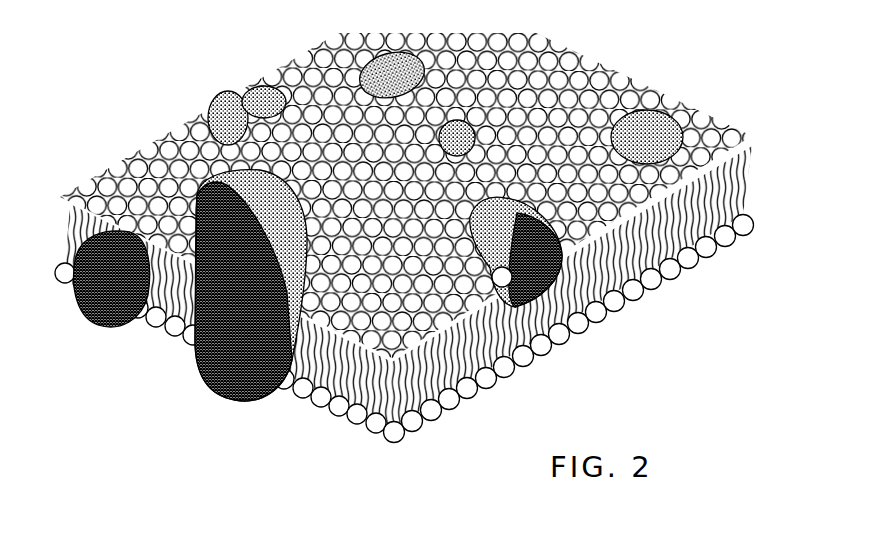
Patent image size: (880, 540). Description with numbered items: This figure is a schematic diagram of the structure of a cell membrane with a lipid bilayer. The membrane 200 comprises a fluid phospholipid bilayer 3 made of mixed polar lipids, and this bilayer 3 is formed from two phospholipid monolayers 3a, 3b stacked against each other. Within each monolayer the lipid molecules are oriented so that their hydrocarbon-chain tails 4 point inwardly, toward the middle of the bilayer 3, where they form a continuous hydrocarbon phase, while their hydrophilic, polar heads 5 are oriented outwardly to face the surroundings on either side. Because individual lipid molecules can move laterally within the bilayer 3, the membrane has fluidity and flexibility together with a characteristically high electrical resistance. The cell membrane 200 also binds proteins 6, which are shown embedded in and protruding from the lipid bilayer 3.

The membrane 200 is at (215, 34).
The phospholipid bilayer 3 is at (772, 163).
The phospholipid monolayer 3a is at (755, 142).
The phospholipid monolayer 3b is at (762, 198).
The hydrocarbon-chain tails 4 is at (706, 257).
The hydrophilic, polar heads 5 is at (700, 258).
The proteins 6 is at (221, 402).